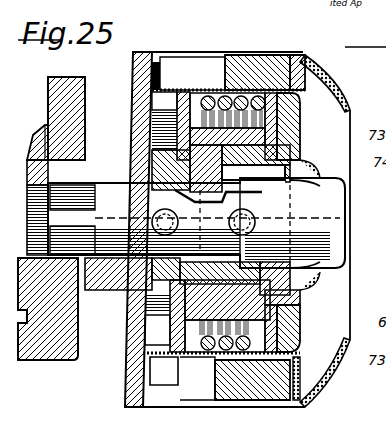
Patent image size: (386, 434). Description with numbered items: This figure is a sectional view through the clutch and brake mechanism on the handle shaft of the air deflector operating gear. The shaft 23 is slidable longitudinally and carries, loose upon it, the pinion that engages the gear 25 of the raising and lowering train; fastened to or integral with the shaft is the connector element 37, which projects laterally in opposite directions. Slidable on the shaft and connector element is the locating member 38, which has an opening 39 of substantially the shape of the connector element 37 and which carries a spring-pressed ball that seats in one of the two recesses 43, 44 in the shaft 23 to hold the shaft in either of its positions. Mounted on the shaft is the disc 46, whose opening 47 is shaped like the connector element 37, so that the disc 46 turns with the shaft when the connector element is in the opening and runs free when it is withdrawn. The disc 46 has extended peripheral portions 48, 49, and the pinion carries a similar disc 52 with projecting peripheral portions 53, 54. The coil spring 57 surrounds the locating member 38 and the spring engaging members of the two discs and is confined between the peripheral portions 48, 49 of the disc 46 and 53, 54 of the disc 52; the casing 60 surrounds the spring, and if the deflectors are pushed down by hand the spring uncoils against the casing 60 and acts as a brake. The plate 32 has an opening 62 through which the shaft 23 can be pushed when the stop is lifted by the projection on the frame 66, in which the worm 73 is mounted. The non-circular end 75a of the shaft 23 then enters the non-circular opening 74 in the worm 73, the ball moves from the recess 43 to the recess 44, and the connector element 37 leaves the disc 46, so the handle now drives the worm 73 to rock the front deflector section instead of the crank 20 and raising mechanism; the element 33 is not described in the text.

The crank 20 is at (145, 320).
The shaft 23 is at (340, 222).
The gear 25 is at (165, 395).
The plate 32 is at (135, 75).
The friction plate 33 is at (258, 400).
The connector element 37 is at (133, 282).
The locating member 38 is at (300, 312).
The opening 39 is at (303, 295).
The recess 43 is at (164, 215).
The recess 44 is at (252, 222).
The disc 46 is at (300, 139).
The opening 47 is at (300, 168).
The extended peripheral portion 48 is at (302, 380).
The extended peripheral portion 49 is at (296, 55).
The disc 52 is at (177, 108).
The projecting peripheral portion 53 is at (192, 73).
The projecting peripheral portion 54 is at (182, 378).
The coil spring 57 is at (248, 55).
The casing 60 is at (178, 52).
The opening 62 is at (133, 172).
The frame 66 is at (52, 357).
The worm 73 is at (40, 136).
The non-circular opening 74 is at (40, 250).
The non-circular end 75a is at (130, 292).